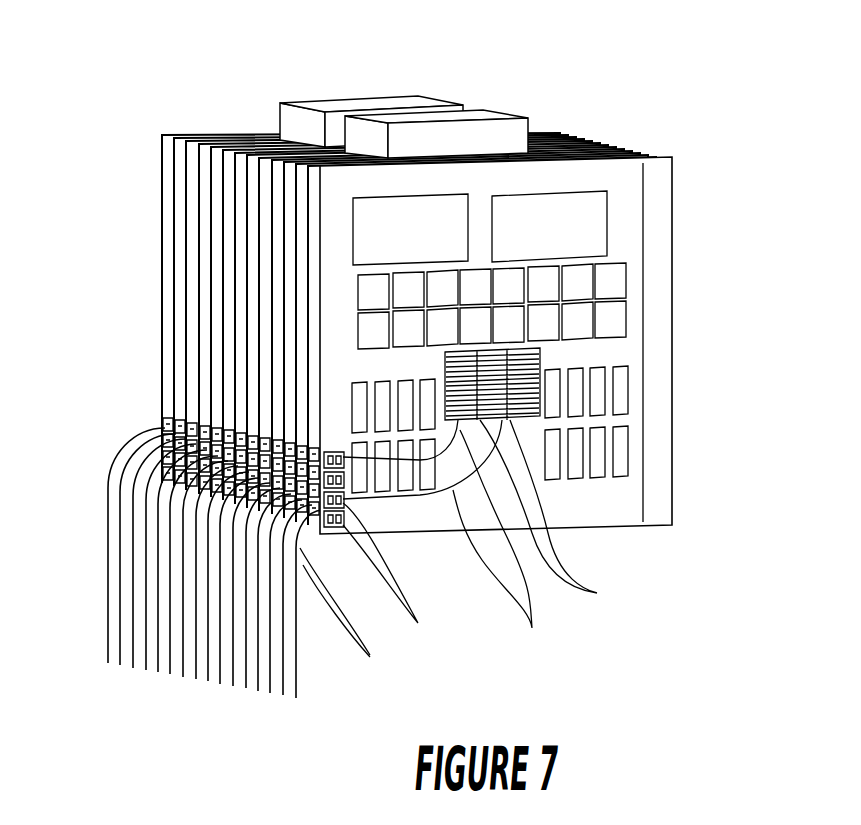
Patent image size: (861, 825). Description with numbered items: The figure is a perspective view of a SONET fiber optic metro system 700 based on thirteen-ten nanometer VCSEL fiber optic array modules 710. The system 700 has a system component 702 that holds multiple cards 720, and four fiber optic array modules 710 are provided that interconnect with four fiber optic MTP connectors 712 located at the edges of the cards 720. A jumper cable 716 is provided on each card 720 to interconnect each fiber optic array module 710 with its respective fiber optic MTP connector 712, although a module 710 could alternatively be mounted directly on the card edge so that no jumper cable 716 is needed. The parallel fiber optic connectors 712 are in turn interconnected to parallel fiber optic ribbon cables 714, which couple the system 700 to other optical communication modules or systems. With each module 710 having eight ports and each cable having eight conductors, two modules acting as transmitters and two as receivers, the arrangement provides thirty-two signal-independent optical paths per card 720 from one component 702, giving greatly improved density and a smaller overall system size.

The SONET metro system 700 is at (410, 361).
The system component 702 is at (663, 238).
The fiber optic array module 710 is at (562, 518).
The fiber optic MTP connector 712 is at (405, 574).
The parallel fiber optic ribbon cable 714 is at (363, 614).
The jumper cable 716 is at (449, 548).
The card 720 is at (182, 173).